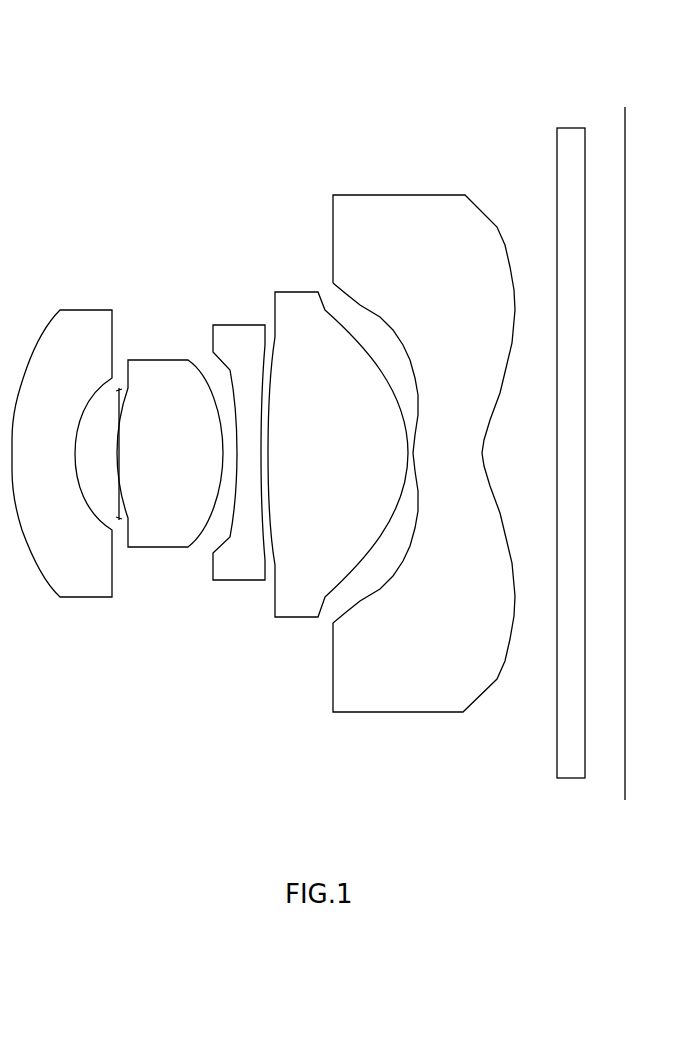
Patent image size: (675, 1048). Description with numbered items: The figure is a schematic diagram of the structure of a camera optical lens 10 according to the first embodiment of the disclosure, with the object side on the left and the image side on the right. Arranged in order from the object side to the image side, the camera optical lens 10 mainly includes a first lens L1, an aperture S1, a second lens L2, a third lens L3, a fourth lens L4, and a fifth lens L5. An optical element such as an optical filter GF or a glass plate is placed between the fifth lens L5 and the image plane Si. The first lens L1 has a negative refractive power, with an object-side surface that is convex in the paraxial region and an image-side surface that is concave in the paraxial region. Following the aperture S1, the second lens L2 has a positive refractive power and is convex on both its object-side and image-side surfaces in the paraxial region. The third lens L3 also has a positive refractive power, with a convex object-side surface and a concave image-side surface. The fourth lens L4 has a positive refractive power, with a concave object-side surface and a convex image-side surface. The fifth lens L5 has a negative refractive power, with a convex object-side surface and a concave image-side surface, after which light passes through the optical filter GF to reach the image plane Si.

The camera optical lens 10 is at (338, 50).
The first lens L1 is at (62, 439).
The aperture S1 is at (120, 524).
The second lens L2 is at (170, 442).
The third lens L3 is at (239, 440).
The fourth lens L4 is at (338, 441).
The fifth lens L5 is at (424, 439).
The optical filter GF is at (570, 440).
The image plane Si is at (621, 440).